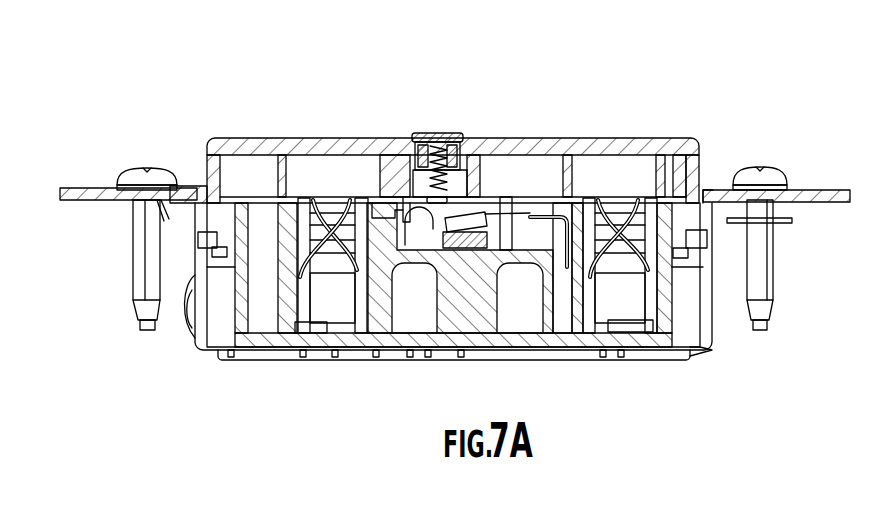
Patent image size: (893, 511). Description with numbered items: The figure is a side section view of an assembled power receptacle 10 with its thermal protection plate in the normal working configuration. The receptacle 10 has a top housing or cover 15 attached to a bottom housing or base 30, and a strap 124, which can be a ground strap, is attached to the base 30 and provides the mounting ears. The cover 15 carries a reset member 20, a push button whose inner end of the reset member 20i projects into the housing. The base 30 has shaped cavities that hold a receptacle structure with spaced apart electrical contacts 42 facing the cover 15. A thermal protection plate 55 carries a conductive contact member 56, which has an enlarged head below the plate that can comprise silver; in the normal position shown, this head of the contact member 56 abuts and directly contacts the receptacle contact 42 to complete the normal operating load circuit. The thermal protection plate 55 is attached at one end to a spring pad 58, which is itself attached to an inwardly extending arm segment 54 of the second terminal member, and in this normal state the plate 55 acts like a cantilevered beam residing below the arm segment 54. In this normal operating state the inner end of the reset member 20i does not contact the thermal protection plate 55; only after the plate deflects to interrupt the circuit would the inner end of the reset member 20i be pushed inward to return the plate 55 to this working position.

The power receptacle 10 is at (643, 66).
The cover 15 is at (690, 138).
The reset member 20 is at (437, 137).
The inner end of the reset member 20i is at (446, 215).
The base 30 is at (660, 347).
The electrical contact 42 is at (467, 237).
The inwardly extending arm segment 54 is at (402, 210).
The thermal protection plate 55 is at (522, 213).
The conductive contact member 56 is at (473, 222).
The spring pad 58 is at (412, 200).
The strap 124 is at (703, 350).